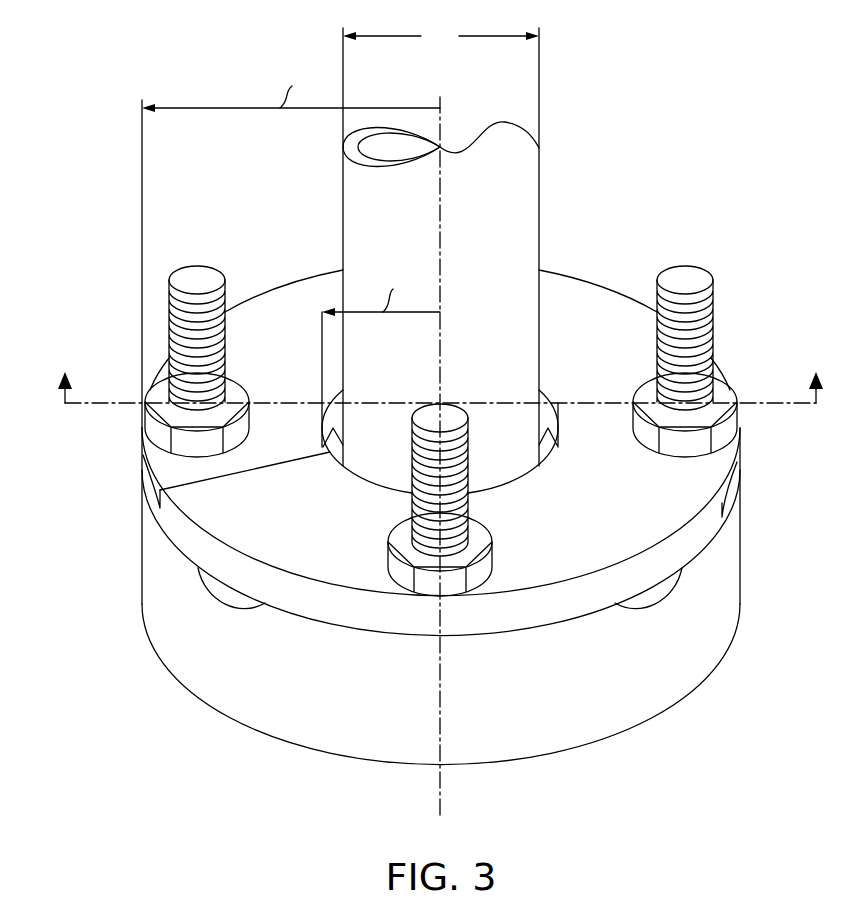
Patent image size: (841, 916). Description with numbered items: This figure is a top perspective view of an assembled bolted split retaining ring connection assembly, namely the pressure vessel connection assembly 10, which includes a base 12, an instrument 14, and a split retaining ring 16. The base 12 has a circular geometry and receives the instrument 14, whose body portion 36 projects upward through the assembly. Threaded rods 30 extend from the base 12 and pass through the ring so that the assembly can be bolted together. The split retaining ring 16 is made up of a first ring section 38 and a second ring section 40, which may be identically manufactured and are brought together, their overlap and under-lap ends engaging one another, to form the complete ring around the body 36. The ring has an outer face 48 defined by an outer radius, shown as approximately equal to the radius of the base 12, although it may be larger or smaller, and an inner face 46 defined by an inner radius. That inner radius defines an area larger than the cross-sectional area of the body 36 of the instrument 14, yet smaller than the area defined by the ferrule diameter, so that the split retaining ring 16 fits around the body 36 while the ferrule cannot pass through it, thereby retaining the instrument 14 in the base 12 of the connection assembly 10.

The pressure vessel connection assembly 10 is at (103, 226).
The base 12 is at (612, 707).
The instrument 14 is at (540, 207).
The split retaining ring 16 is at (614, 296).
The threaded rods 30 is at (683, 273).
The body portion 36 is at (541, 162).
The first ring section 38 is at (315, 572).
The second ring section 40 is at (577, 282).
The inner face 46 is at (547, 418).
The outer face 48 is at (693, 544).